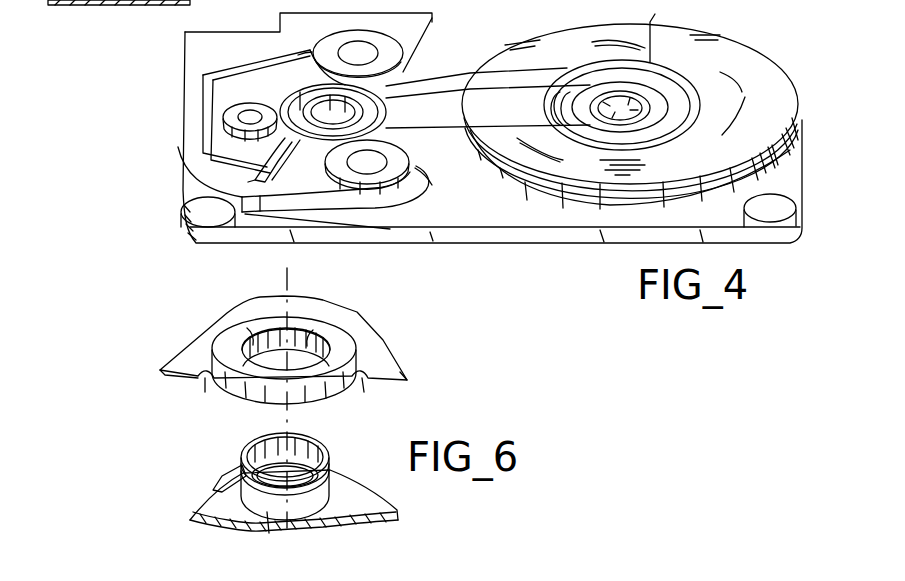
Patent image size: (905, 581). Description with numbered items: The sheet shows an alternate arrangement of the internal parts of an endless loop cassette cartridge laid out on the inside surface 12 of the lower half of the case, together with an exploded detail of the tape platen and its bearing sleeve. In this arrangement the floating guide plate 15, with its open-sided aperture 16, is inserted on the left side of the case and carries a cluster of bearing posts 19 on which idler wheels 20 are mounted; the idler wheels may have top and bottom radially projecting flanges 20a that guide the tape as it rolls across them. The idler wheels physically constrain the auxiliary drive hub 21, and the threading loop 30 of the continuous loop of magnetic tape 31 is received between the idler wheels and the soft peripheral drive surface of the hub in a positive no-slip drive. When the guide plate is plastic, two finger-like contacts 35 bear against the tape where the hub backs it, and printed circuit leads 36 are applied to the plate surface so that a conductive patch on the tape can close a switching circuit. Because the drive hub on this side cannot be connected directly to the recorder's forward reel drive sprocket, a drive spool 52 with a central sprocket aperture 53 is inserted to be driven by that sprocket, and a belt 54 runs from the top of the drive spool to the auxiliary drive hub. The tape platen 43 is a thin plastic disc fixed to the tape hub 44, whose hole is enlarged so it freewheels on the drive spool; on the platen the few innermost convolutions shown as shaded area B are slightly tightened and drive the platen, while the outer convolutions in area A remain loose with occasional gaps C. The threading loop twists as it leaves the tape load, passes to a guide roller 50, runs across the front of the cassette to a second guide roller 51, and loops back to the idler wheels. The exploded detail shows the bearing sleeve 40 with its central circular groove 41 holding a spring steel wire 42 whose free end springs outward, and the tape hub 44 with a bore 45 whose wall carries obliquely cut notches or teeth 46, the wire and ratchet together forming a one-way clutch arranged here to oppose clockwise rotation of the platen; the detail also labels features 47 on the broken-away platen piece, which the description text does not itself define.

In FIG. 6, the inside surface 12 is at (327, 527).
In FIG. 4, the floating guide plate 15 is at (182, 97).
In FIG. 4, the open-sided aperture 16 is at (417, 170).
In FIG. 4, the bearing posts 19 is at (345, 50).
In FIG. 4, the idler wheels 20 is at (225, 125).
In FIG. 4, the radially projecting flanges 20a is at (290, 52).
In FIG. 4, the auxiliary drive hub 21 is at (409, 110).
In FIG. 4, the threading loop 30 is at (316, 210).
In FIG. 4, the continuous loop of magnetic tape 31 is at (693, 178).
In FIG. 4, the finger-like contacts 35 is at (255, 181).
In FIG. 4, the printed circuit leads 36 is at (232, 76).
In FIG. 6, the bearing sleeve 40 is at (257, 439).
In FIG. 6, the central circular groove 41 is at (270, 533).
In FIG. 6, the spring steel wire 42 is at (223, 468).
In FIG. 4, the tape platen 43 is at (549, 196).
In FIG. 6, the tape platen 43 is at (391, 360).
In FIG. 6, the tape hub 44 is at (267, 318).
In FIG. 6, the bore 45 is at (313, 330).
In FIG. 6, the notches or teeth 46 is at (247, 328).
In FIG. 6, the notch 47 is at (286, 397).
In FIG. 4, the guide roller 50 is at (184, 211).
In FIG. 4, the second guide roller 51 is at (792, 211).
In FIG. 4, the drive spool 52 is at (672, 112).
In FIG. 4, the central sprocket aperture 53 is at (660, 100).
In FIG. 4, the belt 54 is at (488, 92).
In FIG. 4, the loose outer convolutions area A is at (764, 76).
In FIG. 4, the inner convolutions area B is at (661, 31).
In FIG. 4, the gaps C is at (595, 42).